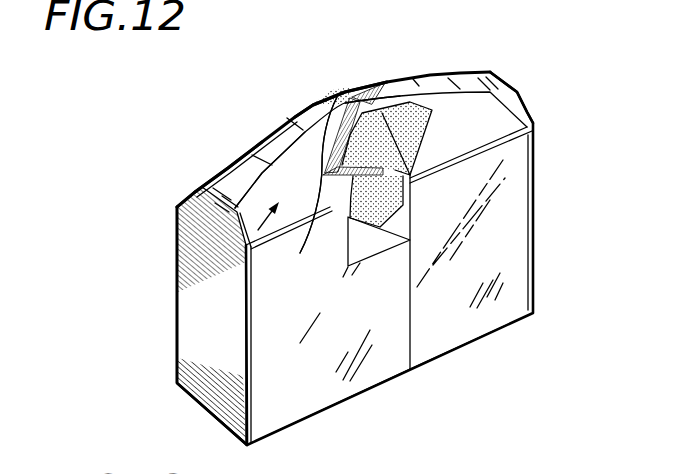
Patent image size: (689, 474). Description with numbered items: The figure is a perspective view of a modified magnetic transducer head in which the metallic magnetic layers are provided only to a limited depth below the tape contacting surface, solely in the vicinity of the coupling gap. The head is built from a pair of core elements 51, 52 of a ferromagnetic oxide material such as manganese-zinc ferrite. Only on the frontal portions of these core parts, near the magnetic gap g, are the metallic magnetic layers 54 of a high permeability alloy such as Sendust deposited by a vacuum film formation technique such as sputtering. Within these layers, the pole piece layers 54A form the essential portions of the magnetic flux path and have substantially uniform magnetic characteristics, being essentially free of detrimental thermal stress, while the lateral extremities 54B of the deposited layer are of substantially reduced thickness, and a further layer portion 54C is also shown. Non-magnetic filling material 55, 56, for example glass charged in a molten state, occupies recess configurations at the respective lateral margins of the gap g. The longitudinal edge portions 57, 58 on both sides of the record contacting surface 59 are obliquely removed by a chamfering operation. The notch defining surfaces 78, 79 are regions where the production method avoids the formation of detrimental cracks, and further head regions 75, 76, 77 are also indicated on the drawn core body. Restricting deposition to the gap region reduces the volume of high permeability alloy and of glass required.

The core element 51 is at (500, 224).
The core element 52 is at (203, 330).
The metallic magnetic layers 54 is at (345, 155).
The pole piece layers 54A is at (360, 90).
The lateral extremities 54B is at (365, 168).
The groove portion 54C is at (297, 188).
The non-magnetic filling material 55 is at (345, 103).
The non-magnetic filling material 56 is at (330, 93).
The longitudinal edge portion 57 is at (211, 162).
The longitudinal edge portion 58 is at (212, 240).
The record contacting surface 59 is at (245, 181).
The front face portion 75 is at (413, 307).
The front face portion 76 is at (320, 372).
The edge 77 is at (176, 208).
The notch defining surface 78 is at (347, 103).
The notch defining surface 79 is at (443, 74).
The magnetic gap g is at (343, 104).